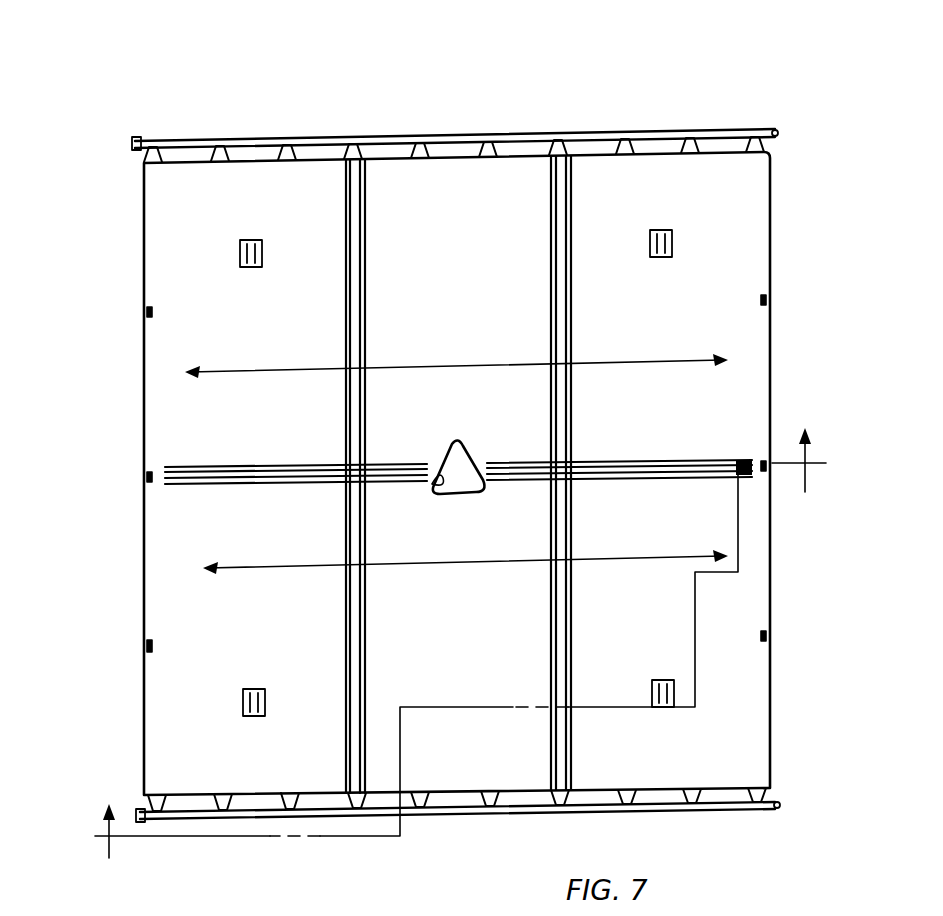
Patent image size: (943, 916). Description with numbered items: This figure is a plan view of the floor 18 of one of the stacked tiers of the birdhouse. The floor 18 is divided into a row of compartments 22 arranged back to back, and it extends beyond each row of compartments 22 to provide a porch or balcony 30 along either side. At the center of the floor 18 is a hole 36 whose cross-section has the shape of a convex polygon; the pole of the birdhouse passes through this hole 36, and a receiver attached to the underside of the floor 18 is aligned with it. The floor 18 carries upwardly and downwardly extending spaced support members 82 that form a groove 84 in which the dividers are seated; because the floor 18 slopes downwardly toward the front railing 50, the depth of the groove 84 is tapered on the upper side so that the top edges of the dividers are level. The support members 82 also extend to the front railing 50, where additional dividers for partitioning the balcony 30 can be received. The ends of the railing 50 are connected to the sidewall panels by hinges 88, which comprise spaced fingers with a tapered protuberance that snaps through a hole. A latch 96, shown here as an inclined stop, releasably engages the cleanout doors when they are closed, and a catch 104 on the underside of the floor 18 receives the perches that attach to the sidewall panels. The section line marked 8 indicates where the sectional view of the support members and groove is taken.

The section line 8- 8 is at (456, 649).
The floor 18 is at (754, 339).
The compartments 22 is at (222, 372).
The balcony 30 is at (730, 203).
The hole 36 is at (432, 484).
The front railing 50 is at (315, 136).
The support members 82 is at (558, 247).
The groove 84 is at (559, 175).
The hinges 88 is at (780, 128).
The latch 96 is at (240, 253).
The catch 104 is at (769, 637).